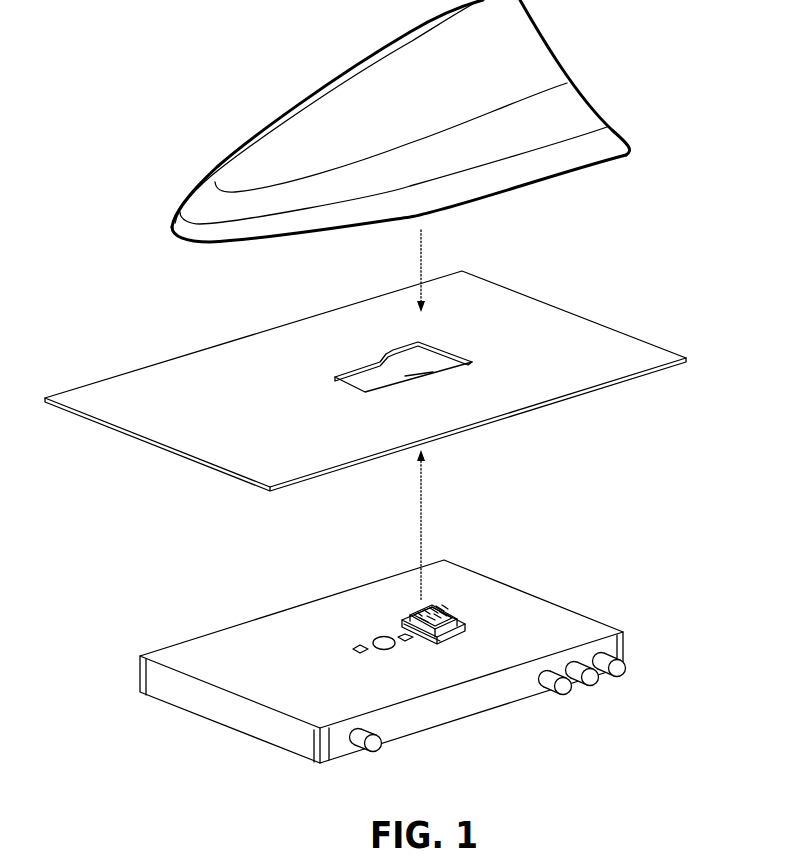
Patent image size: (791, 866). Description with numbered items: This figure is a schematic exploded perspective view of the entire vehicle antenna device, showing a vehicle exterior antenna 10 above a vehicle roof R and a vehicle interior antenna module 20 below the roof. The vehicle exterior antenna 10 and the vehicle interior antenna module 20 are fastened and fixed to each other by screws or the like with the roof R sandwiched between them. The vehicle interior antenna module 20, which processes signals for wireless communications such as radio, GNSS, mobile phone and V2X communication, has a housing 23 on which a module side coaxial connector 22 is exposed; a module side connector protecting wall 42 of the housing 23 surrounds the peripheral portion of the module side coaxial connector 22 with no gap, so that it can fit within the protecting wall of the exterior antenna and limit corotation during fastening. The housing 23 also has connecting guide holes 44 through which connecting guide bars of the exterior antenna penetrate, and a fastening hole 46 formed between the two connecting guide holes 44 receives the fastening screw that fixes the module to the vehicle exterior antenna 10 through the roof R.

The vehicle exterior antenna 10 is at (266, 98).
The vehicle interior antenna module 20 is at (262, 590).
The vehicle roof R is at (605, 383).
The module side coaxial connector 22 is at (463, 622).
The housing 23 is at (498, 697).
The module side connector protecting wall 42 is at (440, 638).
The connecting guide hole 44 is at (353, 650).
The fastening hole 46 is at (388, 650).